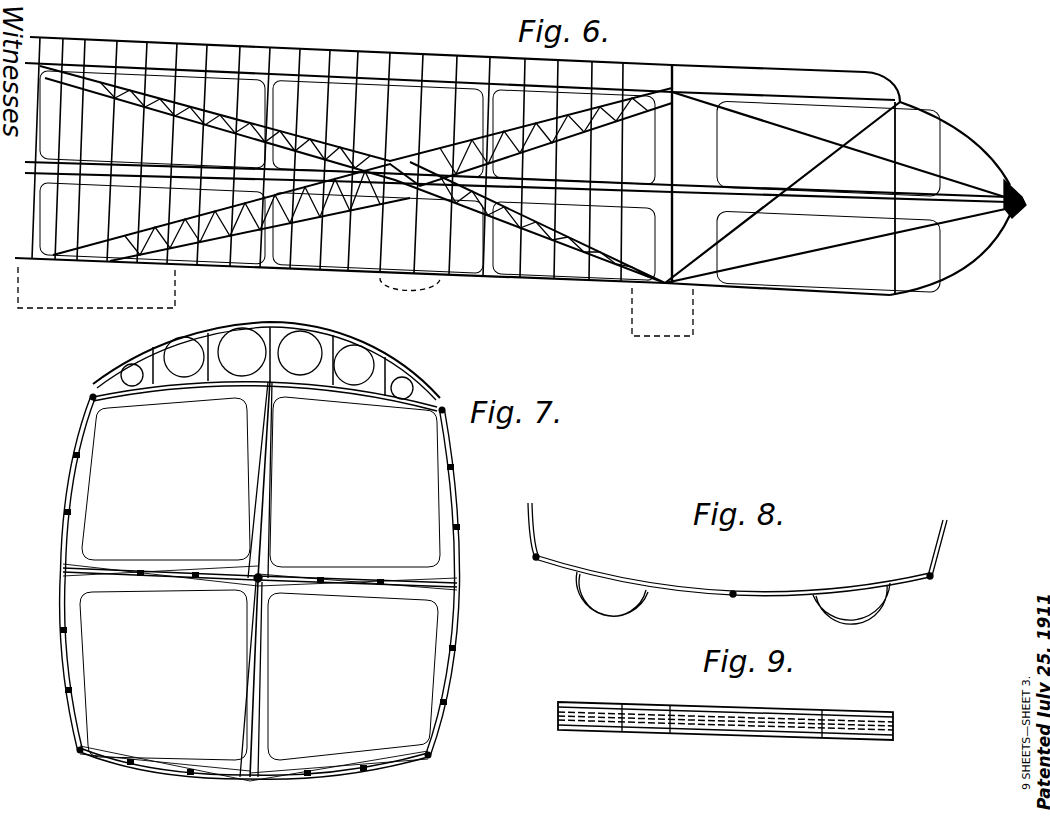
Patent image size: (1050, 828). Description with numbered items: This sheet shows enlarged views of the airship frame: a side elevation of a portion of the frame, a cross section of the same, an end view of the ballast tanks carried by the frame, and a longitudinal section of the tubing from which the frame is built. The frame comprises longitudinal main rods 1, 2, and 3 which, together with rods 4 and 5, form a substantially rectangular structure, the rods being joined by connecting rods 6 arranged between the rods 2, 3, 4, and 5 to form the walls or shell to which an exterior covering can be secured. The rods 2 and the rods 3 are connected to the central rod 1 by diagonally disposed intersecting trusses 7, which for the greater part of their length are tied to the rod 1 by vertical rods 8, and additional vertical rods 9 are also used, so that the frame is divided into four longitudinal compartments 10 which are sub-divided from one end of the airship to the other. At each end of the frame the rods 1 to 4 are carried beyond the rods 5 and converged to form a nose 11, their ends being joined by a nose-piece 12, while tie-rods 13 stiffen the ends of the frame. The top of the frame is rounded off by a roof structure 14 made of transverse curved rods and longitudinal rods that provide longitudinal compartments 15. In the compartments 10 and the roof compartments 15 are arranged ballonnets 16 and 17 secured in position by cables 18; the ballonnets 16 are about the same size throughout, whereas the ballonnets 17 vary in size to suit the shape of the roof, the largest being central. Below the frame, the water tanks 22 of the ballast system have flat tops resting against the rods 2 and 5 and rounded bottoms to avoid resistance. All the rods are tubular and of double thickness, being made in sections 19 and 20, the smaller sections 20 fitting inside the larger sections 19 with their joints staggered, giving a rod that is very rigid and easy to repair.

In FIG. 6, the longitudinal main rod 1 is at (697, 193).
In FIG. 7, the longitudinal main rod 1 is at (277, 567).
In FIG. 6, the longitudinal main rod 2 is at (807, 103).
In FIG. 7, the longitudinal main rod 2 is at (247, 398).
In FIG. 8, the longitudinal main rod 2 is at (737, 590).
In FIG. 7, the longitudinal main rod 3 is at (62, 570).
In FIG. 7, the rod 4 is at (92, 398).
In FIG. 8, the rod 4 is at (540, 558).
In FIG. 7, the rod 5 is at (193, 763).
In FIG. 7, the connecting rod 6 is at (358, 392).
In FIG. 6, the diagonally disposed intersecting truss 7 is at (305, 240).
In FIG. 6, the vertical rod 8 is at (553, 212).
In FIG. 7, the vertical rod 8 is at (257, 667).
In FIG. 6, the additional vertical rod 9 is at (420, 125).
In FIG. 7, the additional vertical rod 9 is at (267, 473).
In FIG. 7, the longitudinal compartment 10 is at (260, 578).
In FIG. 6, the nose 11 is at (958, 271).
In FIG. 6, the nose-piece 12 is at (1010, 182).
In FIG. 6, the tie-rod 13 is at (857, 153).
In FIG. 7, the roof structure 14 is at (355, 347).
In FIG. 6, the longitudinal compartment 15 is at (628, 72).
In FIG. 7, the longitudinal compartment 15 is at (320, 325).
In FIG. 6, the ballonnet 16 is at (738, 287).
In FIG. 7, the ballonnet 16 is at (212, 562).
In FIG. 6, the ballonnet 17 is at (740, 82).
In FIG. 7, the ballonnet 17 is at (387, 362).
In FIG. 7, the cable 18 is at (267, 527).
In FIG. 9, the rod section 19 is at (657, 702).
In FIG. 9, the rod section 20 is at (670, 730).
In FIG. 6, the water tank 22 is at (437, 288).
In FIG. 8, the water tank 22 is at (627, 603).